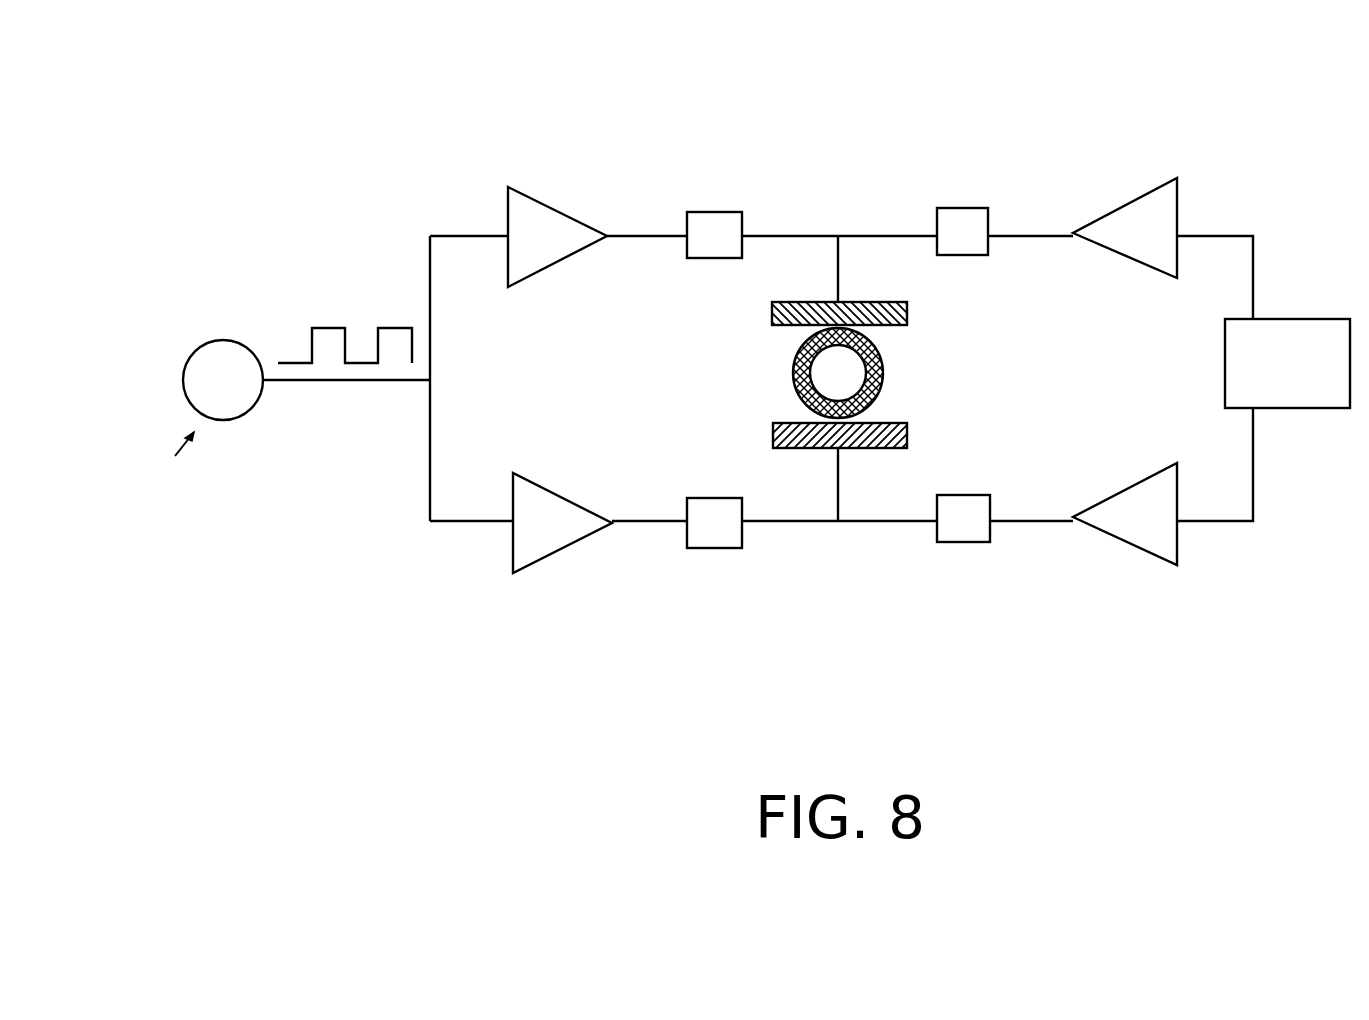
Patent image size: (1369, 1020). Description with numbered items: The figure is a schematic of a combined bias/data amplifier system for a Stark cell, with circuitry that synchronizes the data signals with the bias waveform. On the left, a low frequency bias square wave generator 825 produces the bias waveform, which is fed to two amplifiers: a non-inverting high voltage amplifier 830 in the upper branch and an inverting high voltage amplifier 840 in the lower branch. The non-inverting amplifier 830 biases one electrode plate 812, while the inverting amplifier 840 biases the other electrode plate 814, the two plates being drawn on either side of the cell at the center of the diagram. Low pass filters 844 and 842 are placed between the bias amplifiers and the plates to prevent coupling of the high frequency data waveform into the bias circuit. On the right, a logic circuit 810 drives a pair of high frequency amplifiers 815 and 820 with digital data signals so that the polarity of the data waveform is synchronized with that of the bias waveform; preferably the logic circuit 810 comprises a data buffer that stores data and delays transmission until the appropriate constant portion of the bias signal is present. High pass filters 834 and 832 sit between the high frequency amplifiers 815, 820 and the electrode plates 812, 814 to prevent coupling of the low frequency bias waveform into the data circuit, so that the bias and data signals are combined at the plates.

The logic circuit 810 is at (1304, 319).
The electrode plate 812 is at (907, 313).
The electrode plate 814 is at (907, 433).
The high frequency amplifier 815 is at (1178, 202).
The high frequency amplifier 820 is at (1178, 551).
The generator 825 is at (226, 341).
The non-inverting amplifier 830 is at (508, 218).
The high pass filter 832 is at (968, 542).
The high pass filter 834 is at (950, 208).
The inverting amplifier 840 is at (510, 544).
The low pass filter 842 is at (718, 548).
The low pass filter 844 is at (705, 212).